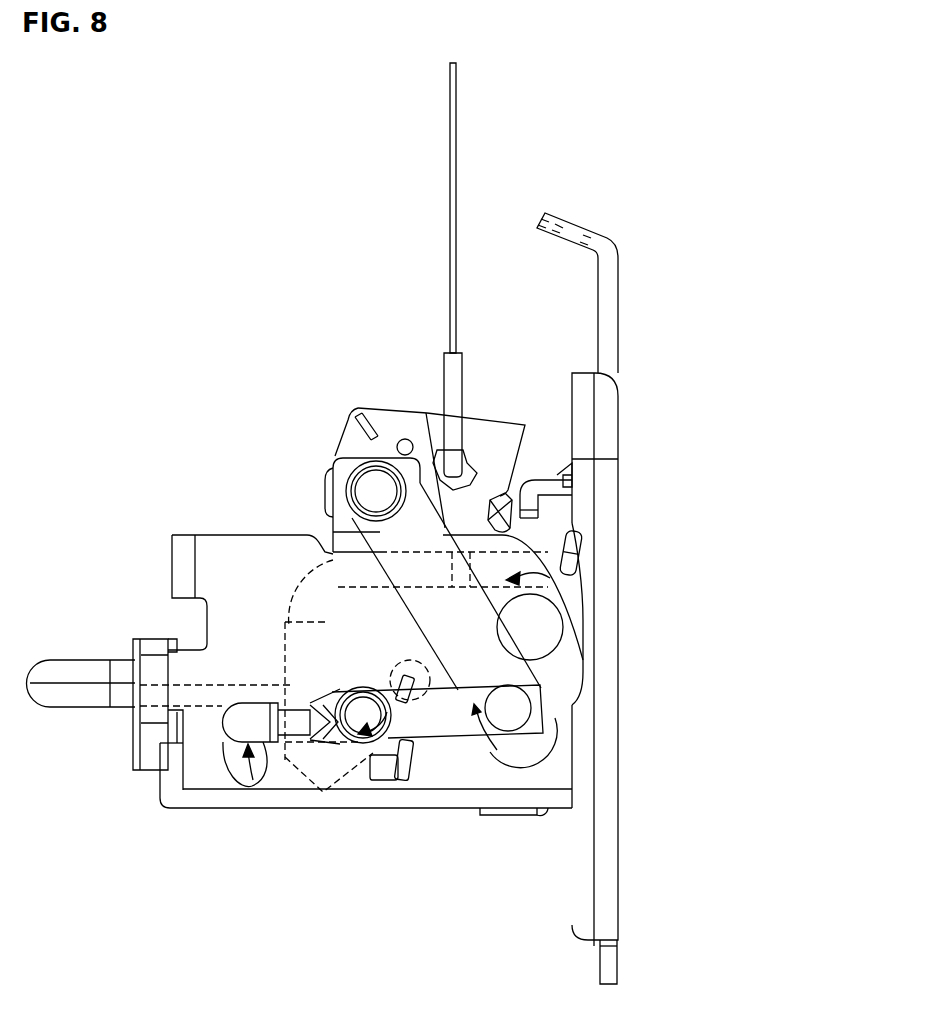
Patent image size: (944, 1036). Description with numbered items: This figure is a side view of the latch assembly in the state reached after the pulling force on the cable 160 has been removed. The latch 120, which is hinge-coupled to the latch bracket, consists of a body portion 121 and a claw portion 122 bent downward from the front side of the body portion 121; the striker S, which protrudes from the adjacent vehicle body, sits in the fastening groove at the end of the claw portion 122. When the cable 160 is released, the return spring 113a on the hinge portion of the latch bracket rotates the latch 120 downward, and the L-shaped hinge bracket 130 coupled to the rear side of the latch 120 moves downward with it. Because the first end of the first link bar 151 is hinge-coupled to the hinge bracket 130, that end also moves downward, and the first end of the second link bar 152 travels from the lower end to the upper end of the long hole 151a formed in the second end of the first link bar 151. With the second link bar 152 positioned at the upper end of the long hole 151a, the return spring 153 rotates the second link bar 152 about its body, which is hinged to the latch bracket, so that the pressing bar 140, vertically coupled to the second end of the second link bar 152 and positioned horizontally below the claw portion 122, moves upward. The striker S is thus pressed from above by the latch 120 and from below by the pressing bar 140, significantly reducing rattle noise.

The cable 160 is at (457, 119).
The latch 120 is at (418, 466).
The body portion 121 is at (485, 560).
The claw portion 122 is at (312, 637).
The hinge bracket 130 is at (332, 488).
The return spring 113a is at (572, 562).
The first link bar 151 is at (480, 642).
The long hole 151a is at (453, 730).
The second link bar 152 is at (460, 730).
The return spring 153 is at (398, 745).
The pressing bar 140 is at (240, 733).
The striker S is at (62, 660).